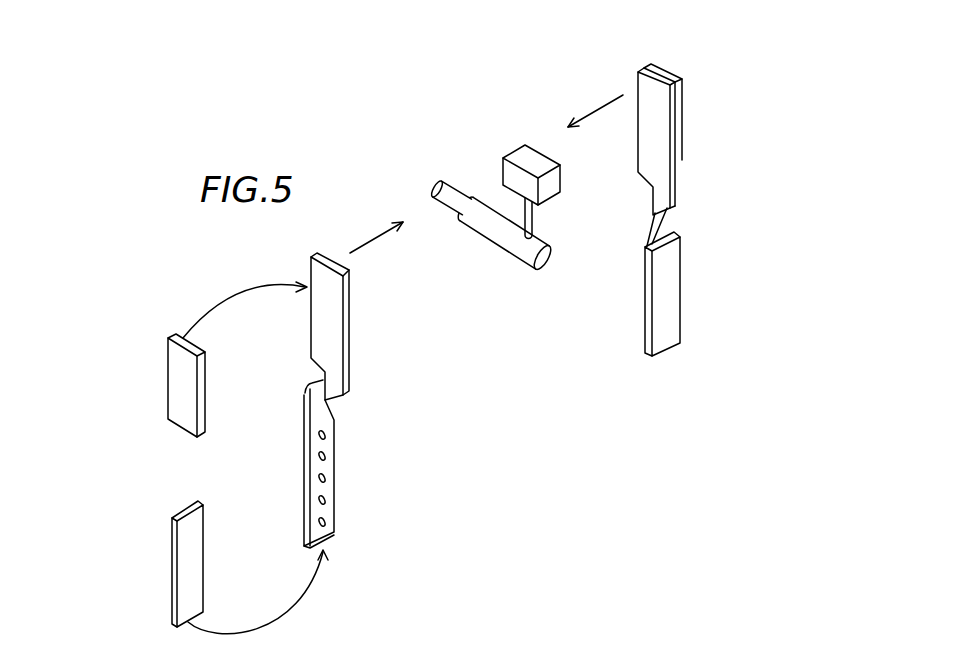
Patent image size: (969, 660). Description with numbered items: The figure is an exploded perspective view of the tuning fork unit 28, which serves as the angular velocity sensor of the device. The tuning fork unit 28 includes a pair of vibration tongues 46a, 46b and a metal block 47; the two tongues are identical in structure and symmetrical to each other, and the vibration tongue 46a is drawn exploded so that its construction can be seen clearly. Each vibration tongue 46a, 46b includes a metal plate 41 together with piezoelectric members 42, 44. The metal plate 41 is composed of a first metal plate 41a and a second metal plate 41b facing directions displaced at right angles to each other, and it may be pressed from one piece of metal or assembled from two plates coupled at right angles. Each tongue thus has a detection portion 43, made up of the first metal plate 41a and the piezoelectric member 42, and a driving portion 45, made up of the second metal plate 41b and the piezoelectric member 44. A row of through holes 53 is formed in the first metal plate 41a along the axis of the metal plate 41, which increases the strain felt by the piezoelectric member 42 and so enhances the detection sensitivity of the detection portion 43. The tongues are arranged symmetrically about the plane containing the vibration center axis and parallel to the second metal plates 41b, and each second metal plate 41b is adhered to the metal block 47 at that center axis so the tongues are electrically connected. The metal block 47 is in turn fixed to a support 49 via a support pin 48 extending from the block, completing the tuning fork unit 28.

The tuning fork unit 28 is at (705, 570).
The metal plate 41 is at (667, 228).
The first metal plate 41a is at (330, 440).
The second metal plate 41b is at (330, 343).
The piezoelectric member 42 is at (182, 587).
The detection portion 43 is at (745, 418).
The piezoelectric member 44 is at (188, 402).
The driving portion 45 is at (745, 13).
The vibration tongue 46a is at (90, 368).
The vibration tongue 46b is at (831, 312).
The metal block 47 is at (520, 157).
The support pin 48 is at (533, 222).
The support 49 is at (500, 253).
The through holes 53 is at (320, 483).